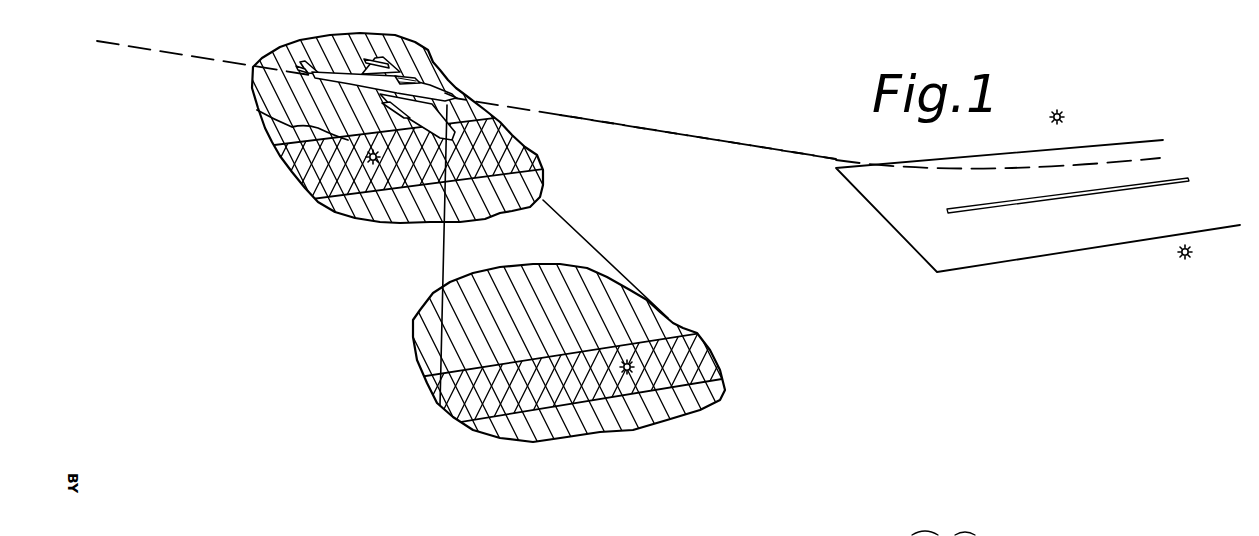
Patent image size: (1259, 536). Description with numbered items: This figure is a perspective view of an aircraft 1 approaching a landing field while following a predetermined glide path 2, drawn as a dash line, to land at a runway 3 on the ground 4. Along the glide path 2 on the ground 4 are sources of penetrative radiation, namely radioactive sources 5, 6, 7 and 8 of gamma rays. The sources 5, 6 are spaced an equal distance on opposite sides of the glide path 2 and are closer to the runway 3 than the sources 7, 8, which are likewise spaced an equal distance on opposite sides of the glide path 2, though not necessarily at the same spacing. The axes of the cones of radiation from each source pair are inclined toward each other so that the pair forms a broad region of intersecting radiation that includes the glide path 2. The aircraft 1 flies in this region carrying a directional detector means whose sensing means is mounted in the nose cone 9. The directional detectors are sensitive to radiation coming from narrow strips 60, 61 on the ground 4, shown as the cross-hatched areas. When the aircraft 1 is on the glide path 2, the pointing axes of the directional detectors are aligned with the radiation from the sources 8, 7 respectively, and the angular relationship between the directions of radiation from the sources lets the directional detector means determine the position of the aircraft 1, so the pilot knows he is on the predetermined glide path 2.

The aircraft 1 is at (393, 77).
The glide path 2 is at (641, 129).
The runway 3 is at (1076, 149).
The ground 4 is at (754, 169).
The radioactive source 5 is at (1062, 112).
The radioactive source 6 is at (1200, 257).
The radioactive source 7 is at (633, 366).
The radioactive source 8 is at (257, 110).
The nose cone 9 is at (463, 98).
The narrow strip 60 is at (308, 177).
The narrow strip 61 is at (450, 388).